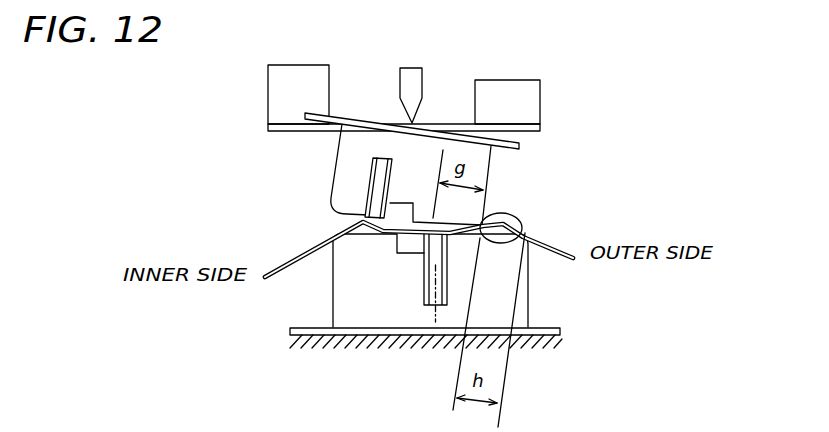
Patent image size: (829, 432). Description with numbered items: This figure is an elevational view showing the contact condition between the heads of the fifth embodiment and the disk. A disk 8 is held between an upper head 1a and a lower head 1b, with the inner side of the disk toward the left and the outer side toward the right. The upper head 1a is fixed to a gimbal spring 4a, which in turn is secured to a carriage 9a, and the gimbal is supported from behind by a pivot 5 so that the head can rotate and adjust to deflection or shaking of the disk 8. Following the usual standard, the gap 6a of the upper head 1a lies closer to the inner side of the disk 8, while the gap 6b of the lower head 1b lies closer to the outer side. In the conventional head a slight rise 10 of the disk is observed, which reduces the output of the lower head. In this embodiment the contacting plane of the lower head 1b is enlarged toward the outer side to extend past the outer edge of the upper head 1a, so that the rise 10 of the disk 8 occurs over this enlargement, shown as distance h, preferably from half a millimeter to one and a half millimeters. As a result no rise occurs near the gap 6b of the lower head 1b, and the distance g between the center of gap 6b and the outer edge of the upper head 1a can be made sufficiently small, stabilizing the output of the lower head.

The carriage 9a is at (297, 82).
The pivot 5 is at (408, 82).
The upper head 1a is at (382, 142).
The gimbal spring 4a is at (520, 144).
The gap center 6a is at (380, 182).
The lower head 1b is at (523, 313).
The gap center 6b is at (427, 290).
The disk 8 is at (540, 233).
The rise 10 is at (510, 215).